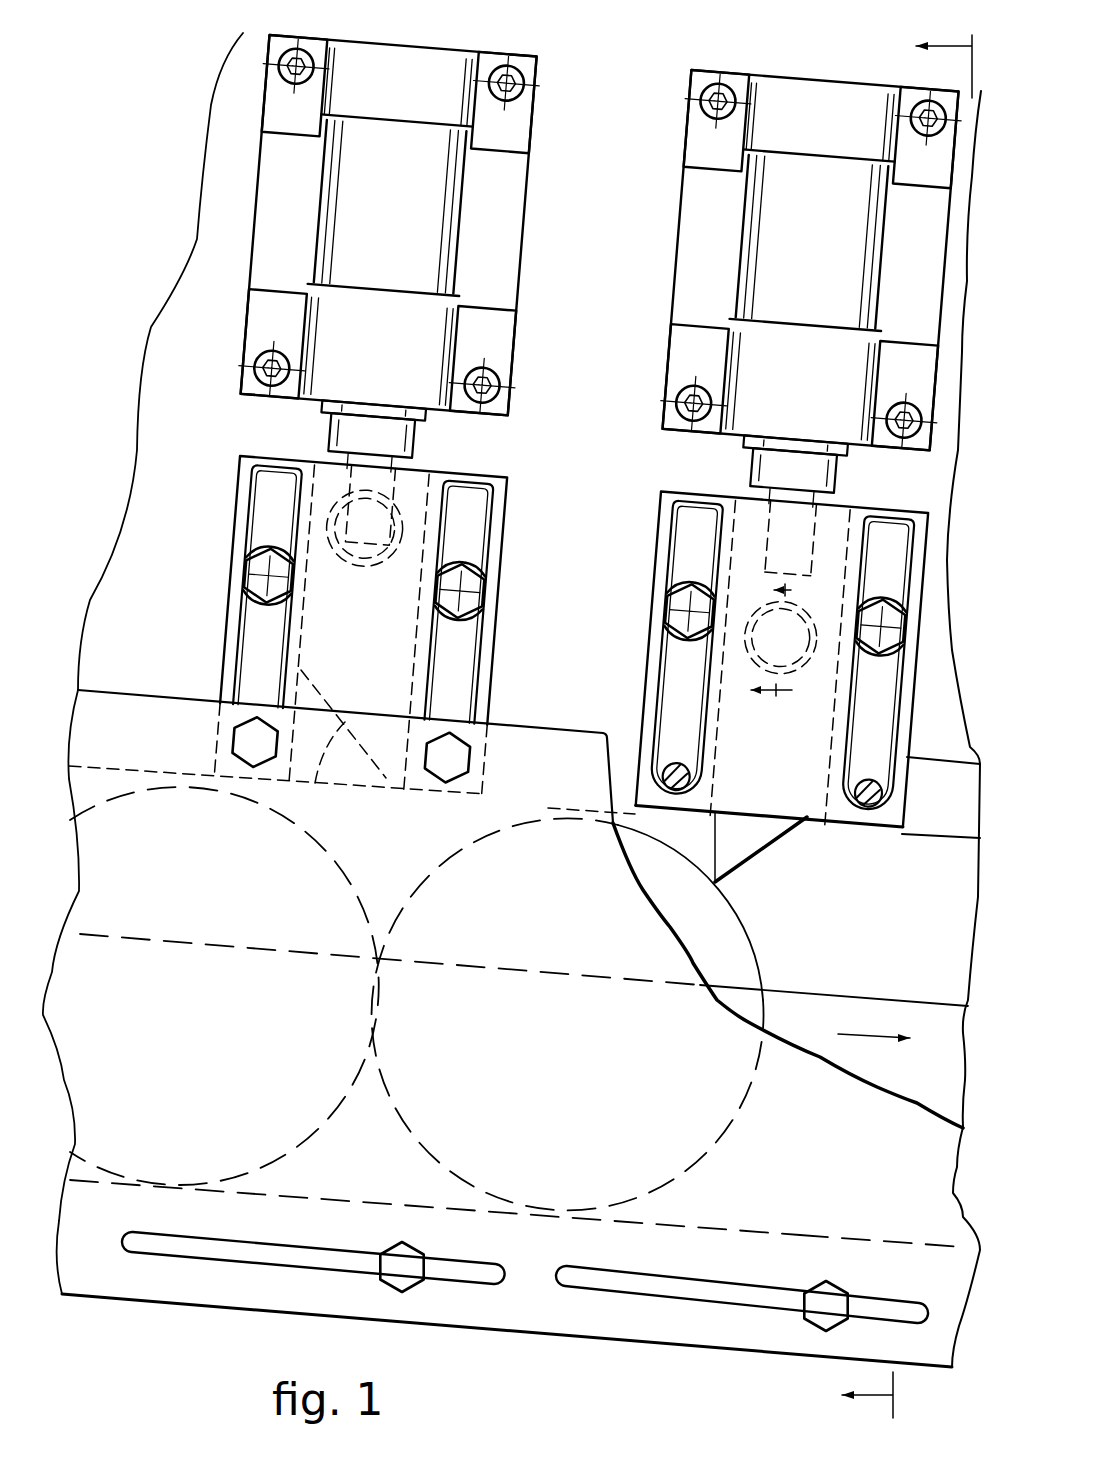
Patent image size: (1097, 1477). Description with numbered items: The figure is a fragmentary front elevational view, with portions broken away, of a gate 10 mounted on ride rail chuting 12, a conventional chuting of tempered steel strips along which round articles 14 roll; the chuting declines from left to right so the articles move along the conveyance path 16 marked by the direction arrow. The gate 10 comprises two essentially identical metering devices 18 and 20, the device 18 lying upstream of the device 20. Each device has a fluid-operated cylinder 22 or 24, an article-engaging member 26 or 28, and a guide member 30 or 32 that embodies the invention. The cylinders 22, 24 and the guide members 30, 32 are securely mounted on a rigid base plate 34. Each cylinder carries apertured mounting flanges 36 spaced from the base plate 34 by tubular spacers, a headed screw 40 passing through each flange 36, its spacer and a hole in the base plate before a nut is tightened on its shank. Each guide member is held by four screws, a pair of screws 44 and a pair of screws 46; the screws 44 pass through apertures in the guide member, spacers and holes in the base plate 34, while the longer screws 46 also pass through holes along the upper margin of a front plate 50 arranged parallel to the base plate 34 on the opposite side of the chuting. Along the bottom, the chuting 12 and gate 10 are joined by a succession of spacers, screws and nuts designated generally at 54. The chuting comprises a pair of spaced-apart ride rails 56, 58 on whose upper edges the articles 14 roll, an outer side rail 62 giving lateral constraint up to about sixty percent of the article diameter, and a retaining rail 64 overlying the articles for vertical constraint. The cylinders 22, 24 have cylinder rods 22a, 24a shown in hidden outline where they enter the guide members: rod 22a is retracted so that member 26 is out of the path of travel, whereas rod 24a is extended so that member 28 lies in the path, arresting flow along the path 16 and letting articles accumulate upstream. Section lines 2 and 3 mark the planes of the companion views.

The section line 2- 2 is at (918, 725).
The section line 3- 3 is at (763, 647).
The gate 10 is at (116, 330).
The ride rail chuting 12 is at (968, 1030).
The round articles 14 is at (352, 873).
The conveyance path 16 is at (856, 1036).
The metering device 18 is at (225, 463).
The metering device 20 is at (646, 520).
The fluid-operated cylinder 22 is at (461, 239).
The cylinder rod 22a is at (389, 489).
The fluid-operated cylinder 24 is at (742, 262).
The cylinder rod 24a is at (825, 516).
The article-engaging member 26 is at (319, 784).
The article-engaging member 28 is at (762, 860).
The guide member 30 is at (509, 533).
The guide member 32 is at (646, 658).
The base plate 34 is at (195, 237).
The apertured mounting flanges 36 is at (276, 114).
The cap screw 40 is at (274, 56).
The screws 44 is at (247, 566).
The screws 46 is at (231, 737).
The front plate 50 is at (523, 726).
The spacers and screws and nuts 54 is at (390, 1294).
The ride rail 56 is at (717, 1226).
The ride rail 58 is at (890, 1240).
The side rail 62 is at (827, 1014).
The retaining rail 64 is at (955, 817).